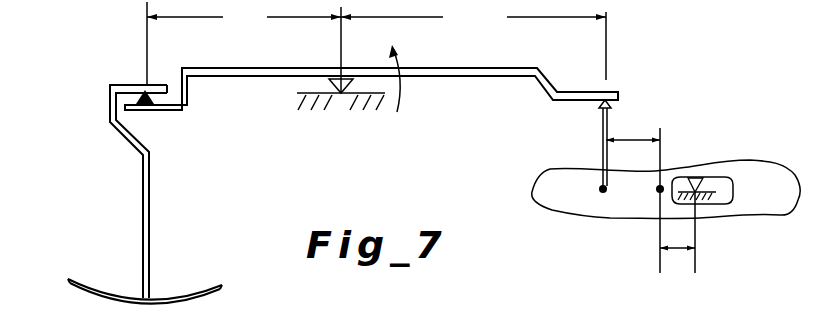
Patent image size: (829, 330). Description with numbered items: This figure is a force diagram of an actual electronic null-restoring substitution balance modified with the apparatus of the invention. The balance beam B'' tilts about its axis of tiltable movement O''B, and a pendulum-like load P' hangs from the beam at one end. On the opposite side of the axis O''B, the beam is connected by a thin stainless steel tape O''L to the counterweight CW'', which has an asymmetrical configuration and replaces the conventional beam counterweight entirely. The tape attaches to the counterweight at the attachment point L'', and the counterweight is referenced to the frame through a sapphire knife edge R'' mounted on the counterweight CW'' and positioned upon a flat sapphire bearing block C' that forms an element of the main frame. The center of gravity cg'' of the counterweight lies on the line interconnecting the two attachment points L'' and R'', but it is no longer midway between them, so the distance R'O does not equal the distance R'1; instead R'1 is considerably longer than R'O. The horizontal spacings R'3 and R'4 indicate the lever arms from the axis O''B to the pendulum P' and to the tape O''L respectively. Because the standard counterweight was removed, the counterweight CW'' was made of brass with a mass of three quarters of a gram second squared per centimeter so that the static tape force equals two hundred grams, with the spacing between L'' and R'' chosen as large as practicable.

The pendulum P' is at (138, 194).
The balance beam B'' is at (371, 92).
The axis of tiltable movement O''B is at (330, 121).
The stainless steel tape O''L is at (566, 126).
The attachment point L'' is at (560, 173).
The center of gravity of the counterweight cg'' is at (681, 176).
The distance from cg'' to attachment point along line L''R'' R'1 is at (633, 96).
The counterweight CW'' is at (666, 216).
The sapphire bearing block C' is at (717, 212).
The sapphire knife edge R'' is at (706, 192).
The distance from cg'' to attachment point along line L''R'' R'O is at (677, 284).
The distance from pendulum to beam pivot R'3 is at (244, 46).
The distance from beam pivot to link R'4 is at (473, 40).